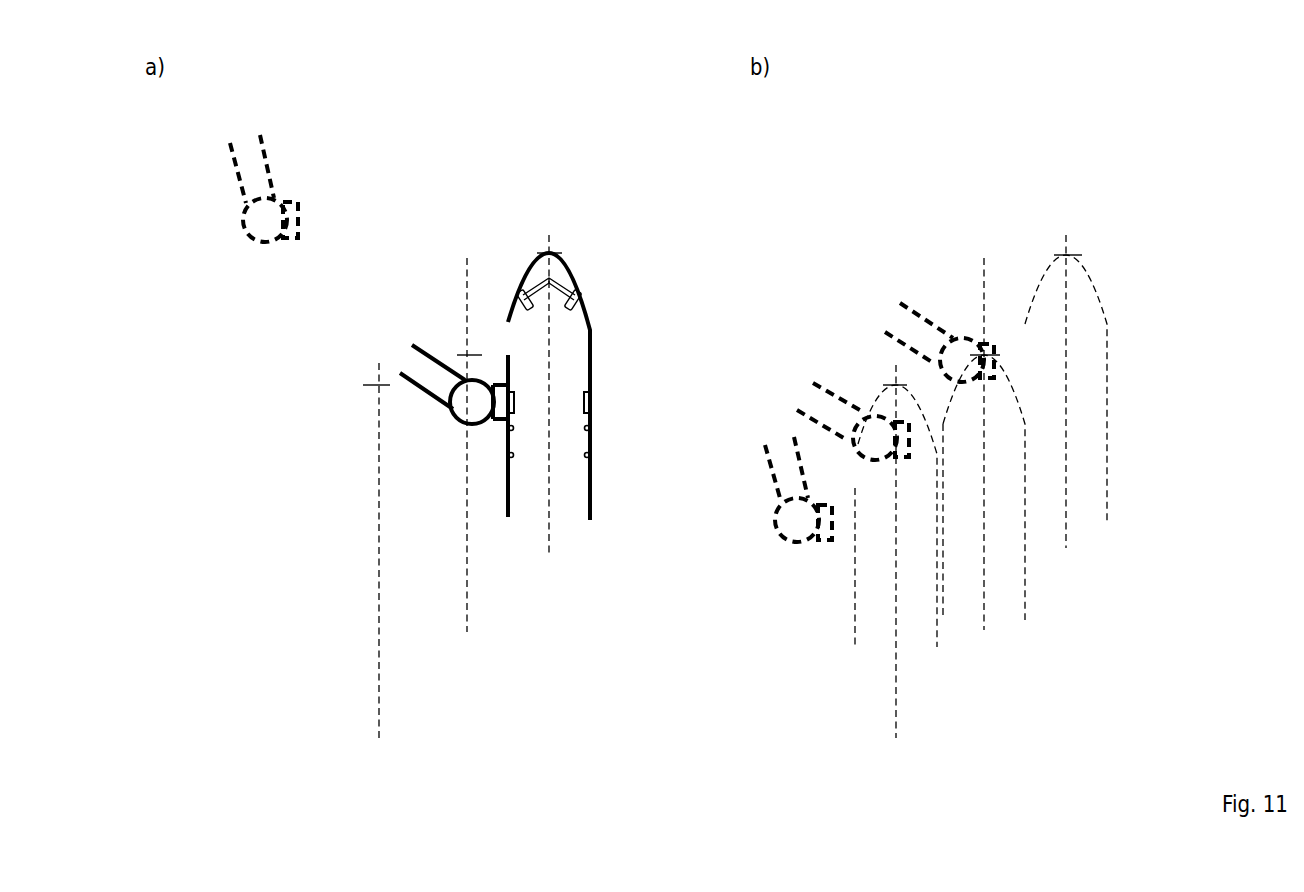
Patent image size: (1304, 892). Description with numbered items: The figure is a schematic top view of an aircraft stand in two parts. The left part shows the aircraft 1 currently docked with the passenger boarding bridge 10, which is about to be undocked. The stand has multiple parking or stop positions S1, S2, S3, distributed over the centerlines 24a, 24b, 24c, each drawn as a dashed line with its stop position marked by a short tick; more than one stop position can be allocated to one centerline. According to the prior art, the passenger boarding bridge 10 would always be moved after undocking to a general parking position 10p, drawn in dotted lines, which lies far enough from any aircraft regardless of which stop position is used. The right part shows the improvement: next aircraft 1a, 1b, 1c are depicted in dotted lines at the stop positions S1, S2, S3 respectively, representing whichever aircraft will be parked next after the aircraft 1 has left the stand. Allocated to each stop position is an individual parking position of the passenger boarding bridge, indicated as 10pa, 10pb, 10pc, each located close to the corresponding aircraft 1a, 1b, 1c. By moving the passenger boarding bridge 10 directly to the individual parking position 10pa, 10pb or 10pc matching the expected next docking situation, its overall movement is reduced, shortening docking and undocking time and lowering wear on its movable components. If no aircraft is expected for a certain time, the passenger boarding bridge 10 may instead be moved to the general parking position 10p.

In FIG. 11a, the aircraft 1 is at (587, 312).
In FIG. 11b, the aircraft 1a is at (937, 647).
In FIG. 11b, the aircraft 1b is at (1025, 620).
In FIG. 11b, the aircraft 1c is at (1107, 497).
In FIG. 11a, the passenger boarding bridge 10 is at (423, 393).
In FIG. 11a, the general parking position 10p is at (262, 242).
In FIG. 11b, the individual parking position 10pa is at (790, 543).
In FIG. 11b, the individual parking position 10pb is at (842, 445).
In FIG. 11b, the individual parking position 10pc is at (967, 383).
In FIG. 11a, the centerline 24a is at (379, 365).
In FIG. 11b, the centerline 24a is at (896, 365).
In FIG. 11a, the centerline 24b is at (467, 275).
In FIG. 11b, the centerline 24b is at (984, 275).
In FIG. 11a, the centerline 24c is at (549, 242).
In FIG. 11b, the centerline 24c is at (1066, 242).
In FIG. 11a, the parking position S1 is at (390, 385).
In FIG. 11b, the parking position S1 is at (907, 385).
In FIG. 11a, the parking position S2 is at (482, 355).
In FIG. 11b, the parking position S2 is at (1000, 355).
In FIG. 11a, the parking position S3 is at (562, 253).
In FIG. 11b, the parking position S3 is at (1082, 255).